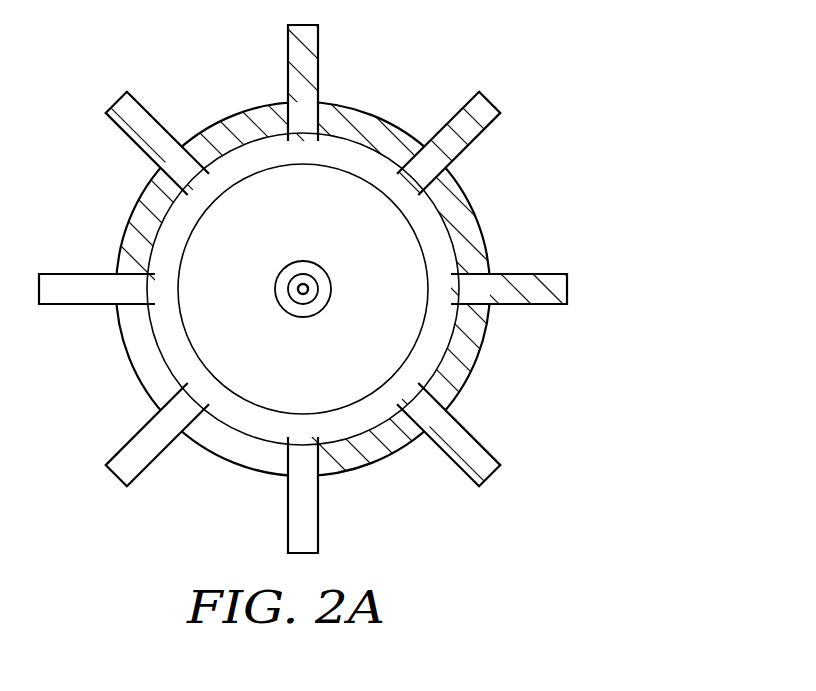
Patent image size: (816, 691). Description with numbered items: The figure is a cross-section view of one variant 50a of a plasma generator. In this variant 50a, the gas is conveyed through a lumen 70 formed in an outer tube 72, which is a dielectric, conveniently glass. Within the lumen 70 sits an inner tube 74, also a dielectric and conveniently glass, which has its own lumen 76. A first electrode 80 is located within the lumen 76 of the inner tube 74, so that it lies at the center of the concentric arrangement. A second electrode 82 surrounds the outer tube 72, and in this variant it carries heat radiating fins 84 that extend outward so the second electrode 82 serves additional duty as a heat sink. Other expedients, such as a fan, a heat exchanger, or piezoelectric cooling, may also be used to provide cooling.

The plasma generator variant 50a is at (408, 345).
The lumen 70 is at (370, 241).
The outer tube 72 is at (438, 257).
The inner tube 74 is at (298, 260).
The lumen 76 is at (288, 290).
The first electrode 80 is at (308, 293).
The second electrode 82 is at (408, 345).
The heat radiating fins 84 is at (491, 100).